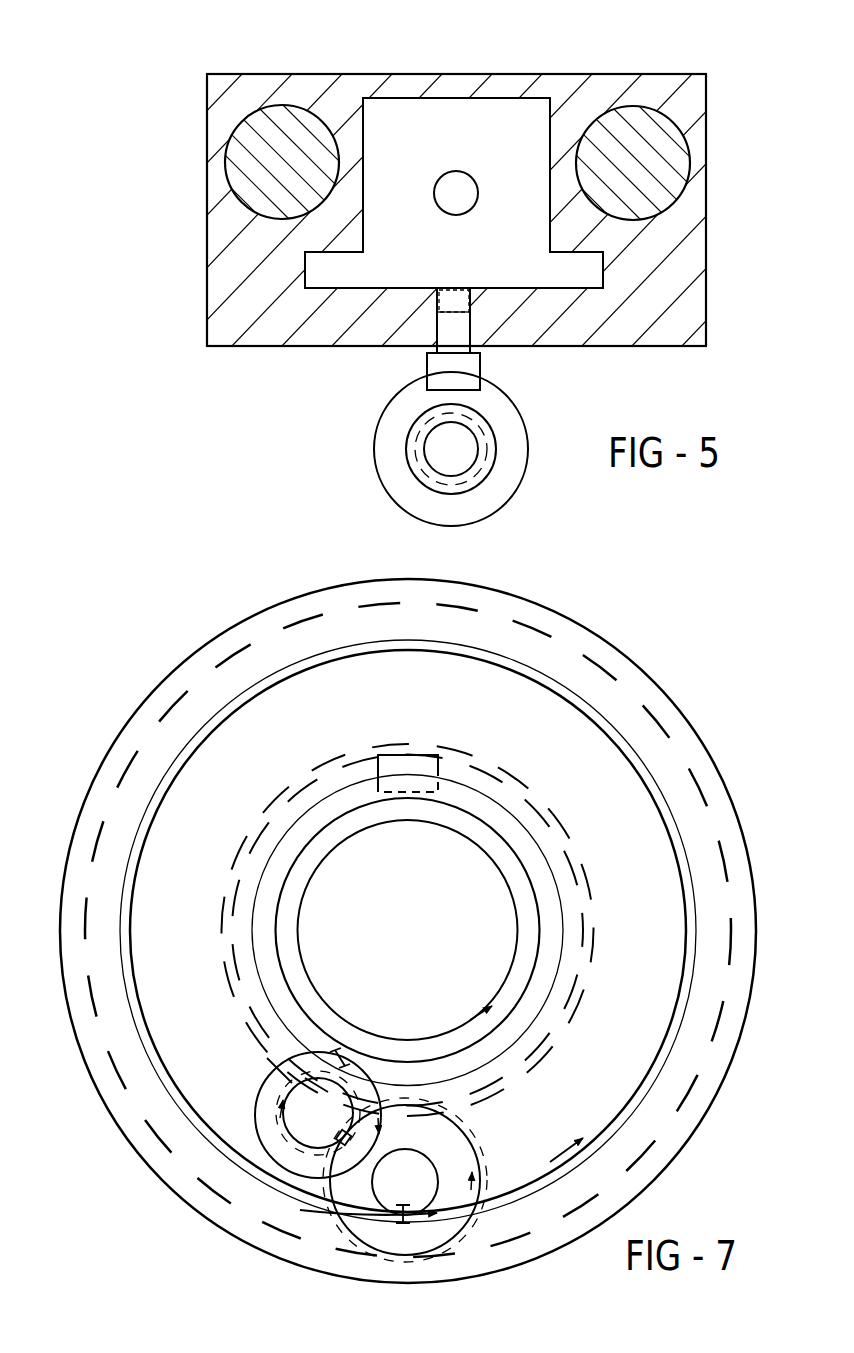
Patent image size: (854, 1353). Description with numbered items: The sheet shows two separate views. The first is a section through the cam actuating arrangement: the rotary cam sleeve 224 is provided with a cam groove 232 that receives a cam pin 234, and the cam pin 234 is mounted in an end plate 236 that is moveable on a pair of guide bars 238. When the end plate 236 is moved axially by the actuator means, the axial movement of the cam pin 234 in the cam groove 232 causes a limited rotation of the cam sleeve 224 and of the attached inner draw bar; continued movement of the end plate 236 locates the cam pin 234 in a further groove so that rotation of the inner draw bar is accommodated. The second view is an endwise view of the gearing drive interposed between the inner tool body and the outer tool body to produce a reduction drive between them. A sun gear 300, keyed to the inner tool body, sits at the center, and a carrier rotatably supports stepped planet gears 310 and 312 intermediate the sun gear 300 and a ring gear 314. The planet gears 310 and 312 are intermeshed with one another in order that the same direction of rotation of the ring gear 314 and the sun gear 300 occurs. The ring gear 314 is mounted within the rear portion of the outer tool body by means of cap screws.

In FIG. 5, the end plate 236 is at (284, 44).
In FIG. 5, the guide bars 238 is at (228, 158).
In FIG. 5, the cam pin 234 is at (474, 368).
In FIG. 5, the cam groove 232 is at (476, 380).
In FIG. 5, the rotary cam sleeve 224 is at (377, 447).
In FIG. 7, the sun gear 300 is at (540, 987).
In FIG. 7, the stepped planet gear 310 is at (256, 1102).
In FIG. 7, the stepped planet gear 312 is at (558, 1120).
In FIG. 7, the ring gear 314 is at (190, 1180).